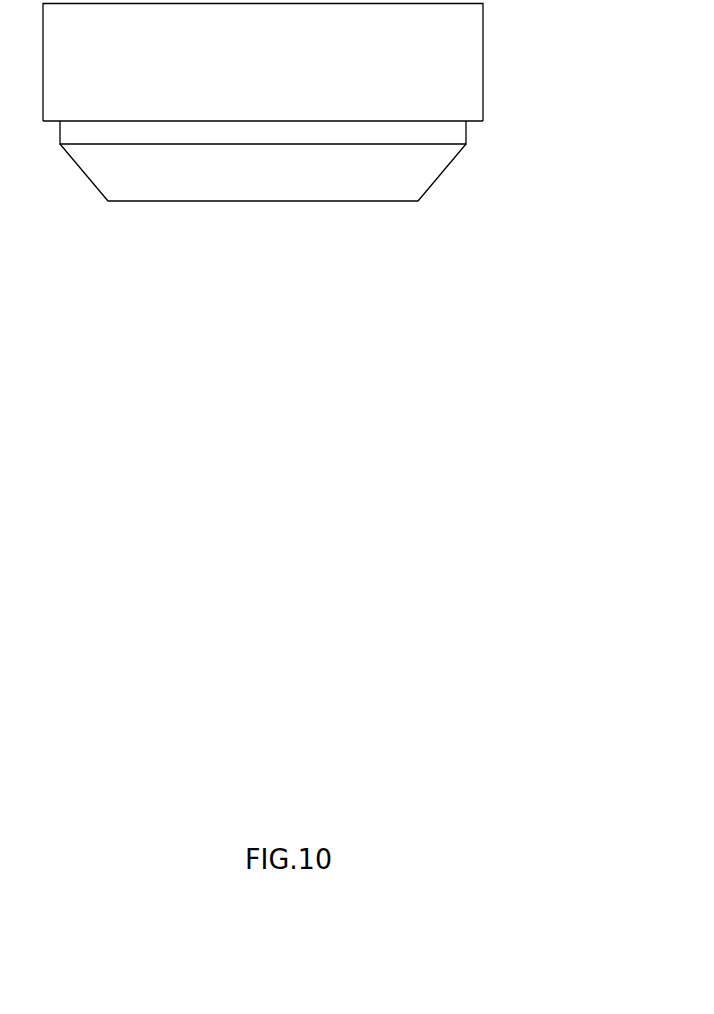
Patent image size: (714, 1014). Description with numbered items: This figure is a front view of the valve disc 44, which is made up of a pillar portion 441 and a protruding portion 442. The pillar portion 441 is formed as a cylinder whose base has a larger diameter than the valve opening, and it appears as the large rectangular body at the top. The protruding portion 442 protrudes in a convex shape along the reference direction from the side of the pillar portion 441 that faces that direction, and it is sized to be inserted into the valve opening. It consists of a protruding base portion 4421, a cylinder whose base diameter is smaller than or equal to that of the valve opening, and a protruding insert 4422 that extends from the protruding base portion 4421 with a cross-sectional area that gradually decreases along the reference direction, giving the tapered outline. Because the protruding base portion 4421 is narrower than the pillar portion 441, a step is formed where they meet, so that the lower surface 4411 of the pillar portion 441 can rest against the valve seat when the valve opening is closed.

The valve disc 44 is at (332, 186).
The pillar portion 441 is at (308, 66).
The lower surface 4411 is at (471, 121).
The protruding portion 442 is at (341, 161).
The protruding base portion 4421 is at (450, 132).
The protruding insert 4422 is at (436, 173).